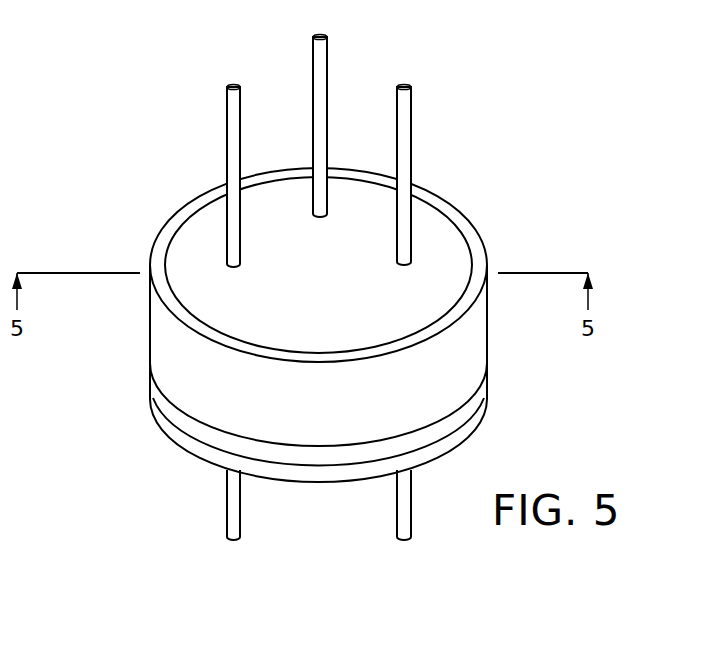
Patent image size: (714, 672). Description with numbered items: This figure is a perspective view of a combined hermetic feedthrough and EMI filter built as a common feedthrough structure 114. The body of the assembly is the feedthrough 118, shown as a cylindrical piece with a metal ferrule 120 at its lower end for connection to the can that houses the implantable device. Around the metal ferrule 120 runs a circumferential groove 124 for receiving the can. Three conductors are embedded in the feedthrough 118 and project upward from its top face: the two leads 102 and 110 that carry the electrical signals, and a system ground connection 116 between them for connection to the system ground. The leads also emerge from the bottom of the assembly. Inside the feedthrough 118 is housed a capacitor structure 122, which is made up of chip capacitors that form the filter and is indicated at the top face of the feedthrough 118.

The lead 102 is at (212, 138).
The system ground connection 116 is at (373, 113).
The lead 110 is at (454, 174).
The feedthrough structure 114 is at (336, 315).
The feedthrough 118 is at (377, 307).
The capacitor structure 122 is at (365, 250).
The circumferential groove 124 is at (268, 414).
The metal ferrule 120 is at (277, 440).